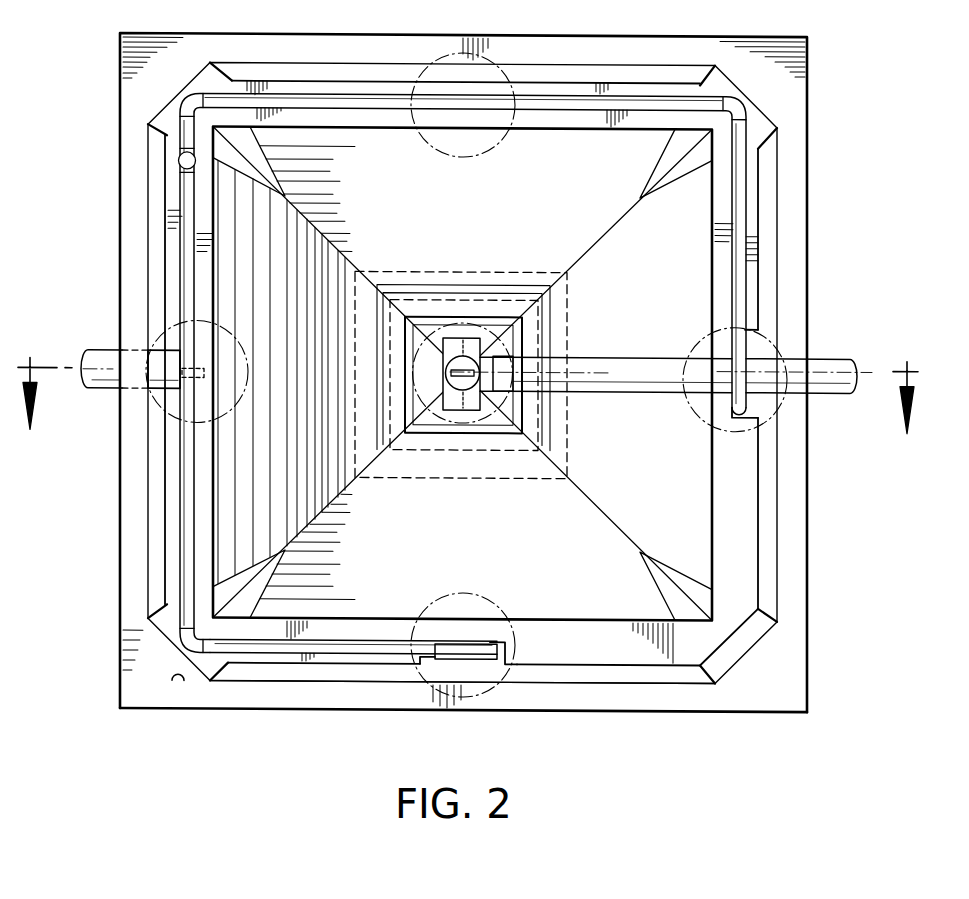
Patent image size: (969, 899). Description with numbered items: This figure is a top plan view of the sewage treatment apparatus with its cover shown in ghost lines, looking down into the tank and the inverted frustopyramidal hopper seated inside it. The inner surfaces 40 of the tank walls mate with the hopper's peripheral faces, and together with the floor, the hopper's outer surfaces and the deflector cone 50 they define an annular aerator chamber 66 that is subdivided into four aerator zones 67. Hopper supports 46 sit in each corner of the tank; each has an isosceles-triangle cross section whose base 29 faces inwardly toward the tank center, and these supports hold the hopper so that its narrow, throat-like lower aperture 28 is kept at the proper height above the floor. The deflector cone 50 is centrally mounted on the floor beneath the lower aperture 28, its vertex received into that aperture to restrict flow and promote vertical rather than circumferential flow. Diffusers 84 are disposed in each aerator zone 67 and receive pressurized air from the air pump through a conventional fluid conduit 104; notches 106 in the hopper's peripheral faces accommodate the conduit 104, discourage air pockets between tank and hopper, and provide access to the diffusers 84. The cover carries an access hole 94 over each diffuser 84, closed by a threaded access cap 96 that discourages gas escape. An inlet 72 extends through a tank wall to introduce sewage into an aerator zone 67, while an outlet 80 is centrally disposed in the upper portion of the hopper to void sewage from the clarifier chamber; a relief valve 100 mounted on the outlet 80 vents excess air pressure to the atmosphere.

The lower aperture 28 is at (490, 455).
The base 29 is at (155, 647).
The inner surfaces 40 is at (518, 667).
The hopper supports 46 is at (180, 682).
The deflector cone 50 is at (573, 336).
The annular aerator chamber 66 is at (597, 681).
The aerator zones 67 is at (548, 201).
The inlet 72 is at (100, 350).
The outlet 80 is at (833, 362).
The diffusers 84 is at (476, 664).
The access hole 94 is at (233, 417).
The access cap 96 is at (250, 383).
The relief valve 100 is at (462, 355).
The fluid conduit 104 is at (343, 657).
The notches 106 is at (185, 392).